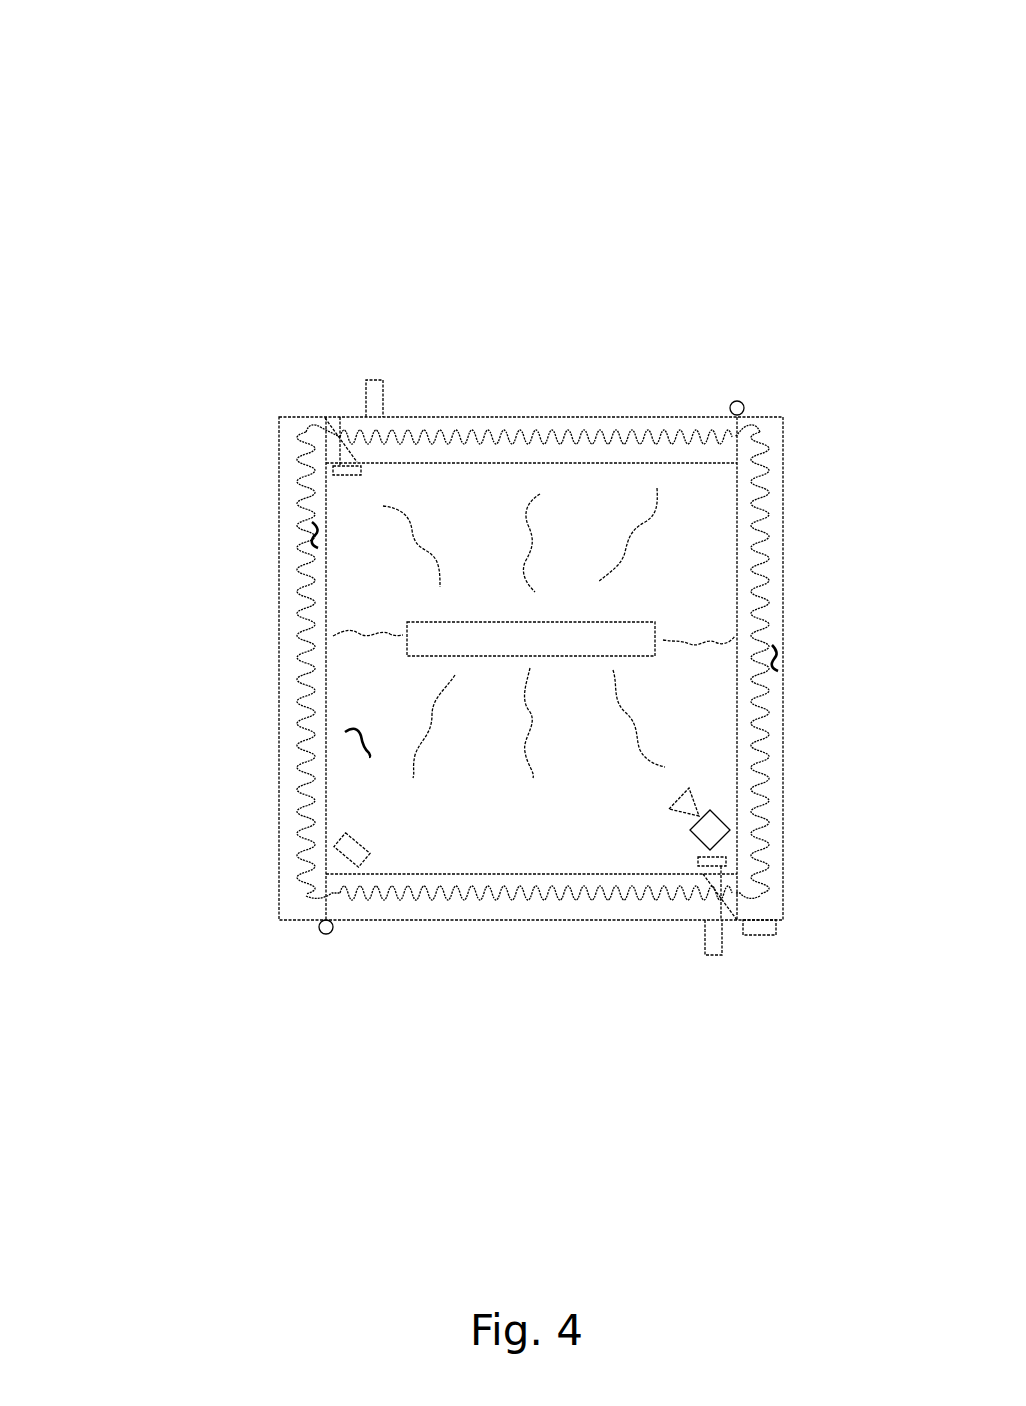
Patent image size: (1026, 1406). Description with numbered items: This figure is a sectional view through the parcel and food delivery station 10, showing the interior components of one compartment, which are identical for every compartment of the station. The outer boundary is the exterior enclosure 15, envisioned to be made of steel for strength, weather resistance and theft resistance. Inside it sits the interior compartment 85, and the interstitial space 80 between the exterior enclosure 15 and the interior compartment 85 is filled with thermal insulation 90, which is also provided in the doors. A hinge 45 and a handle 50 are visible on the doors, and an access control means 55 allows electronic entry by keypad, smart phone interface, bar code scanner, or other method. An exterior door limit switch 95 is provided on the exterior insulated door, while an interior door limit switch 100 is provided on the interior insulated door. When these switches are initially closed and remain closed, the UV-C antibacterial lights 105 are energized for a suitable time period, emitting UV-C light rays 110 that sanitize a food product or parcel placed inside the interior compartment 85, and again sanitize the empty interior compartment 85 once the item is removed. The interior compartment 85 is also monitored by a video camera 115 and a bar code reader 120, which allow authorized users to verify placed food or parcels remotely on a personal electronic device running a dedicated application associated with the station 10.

The parcel and food delivery station 10 is at (116, 180).
The exterior enclosure 15 is at (278, 718).
The hinge 45 is at (740, 402).
The handle 50 is at (378, 380).
The access control means 55 is at (762, 936).
The interstitial space 80 is at (312, 535).
The interior compartment 85 is at (348, 745).
The thermal insulation 90 is at (538, 432).
The exterior door limit switch 95 is at (728, 862).
The interior door limit switch 100 is at (340, 467).
The UV-C antibacterial lights 105 is at (617, 632).
The UV-C light rays 110 is at (540, 543).
The video camera 115 is at (720, 822).
The bar code reader 120 is at (340, 847).